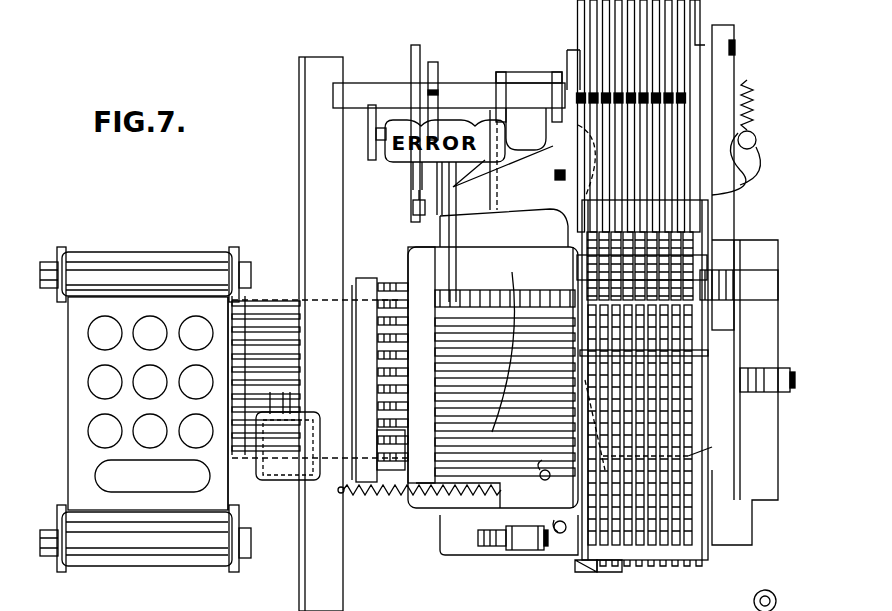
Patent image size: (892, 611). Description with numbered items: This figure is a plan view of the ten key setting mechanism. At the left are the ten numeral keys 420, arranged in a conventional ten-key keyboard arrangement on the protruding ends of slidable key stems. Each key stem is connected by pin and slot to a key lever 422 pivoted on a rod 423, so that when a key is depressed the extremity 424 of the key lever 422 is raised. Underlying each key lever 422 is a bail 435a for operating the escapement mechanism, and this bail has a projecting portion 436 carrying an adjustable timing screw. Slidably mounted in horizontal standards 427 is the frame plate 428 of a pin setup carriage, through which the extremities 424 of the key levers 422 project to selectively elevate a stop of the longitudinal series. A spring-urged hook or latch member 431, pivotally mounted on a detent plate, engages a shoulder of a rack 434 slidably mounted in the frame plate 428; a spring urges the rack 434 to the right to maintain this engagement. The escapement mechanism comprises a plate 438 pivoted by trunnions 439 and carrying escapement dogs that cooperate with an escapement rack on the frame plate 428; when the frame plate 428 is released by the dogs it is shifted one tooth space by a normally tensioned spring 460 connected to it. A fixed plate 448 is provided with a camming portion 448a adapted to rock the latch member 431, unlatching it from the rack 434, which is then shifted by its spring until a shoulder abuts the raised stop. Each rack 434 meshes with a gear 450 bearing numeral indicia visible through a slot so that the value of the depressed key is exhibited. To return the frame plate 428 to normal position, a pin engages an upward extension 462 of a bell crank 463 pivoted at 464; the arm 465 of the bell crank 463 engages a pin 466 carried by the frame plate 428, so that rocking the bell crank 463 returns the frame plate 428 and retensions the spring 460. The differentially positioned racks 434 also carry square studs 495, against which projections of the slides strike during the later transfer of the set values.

The numeral keys 420 is at (97, 340).
The key levers 422 is at (240, 332).
The rod 423 is at (393, 470).
The extremity of key lever 424 is at (509, 342).
The horizontal standards 427 is at (462, 262).
The frame plate 428 is at (572, 229).
The hook or latch member 431 is at (700, 565).
The rack 434 is at (682, 545).
The bail 435a is at (230, 432).
The projecting portion 436 is at (460, 484).
The plate 438 is at (552, 545).
The trunnions 439 is at (550, 520).
The fixed plate 448 is at (615, 572).
The camming portion 448a is at (582, 572).
The gear 450 is at (695, 228).
The spring 460 is at (397, 497).
The upward extension 462 is at (413, 208).
The bell crank 463 is at (524, 196).
The pivot 464 is at (555, 176).
The arm 465 is at (540, 468).
The pin 466 is at (672, 441).
The square studs 495 is at (580, 80).